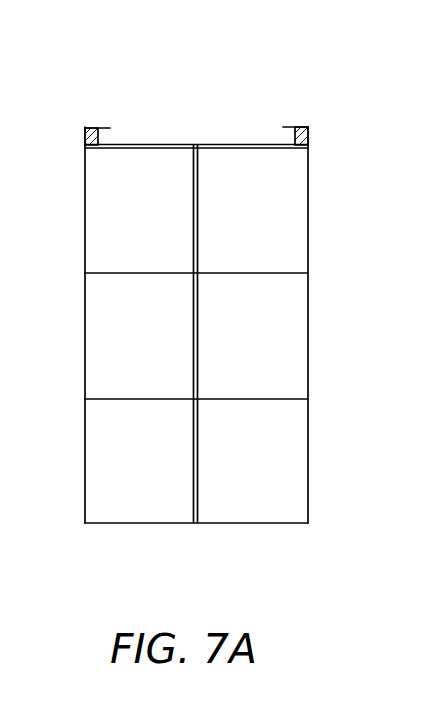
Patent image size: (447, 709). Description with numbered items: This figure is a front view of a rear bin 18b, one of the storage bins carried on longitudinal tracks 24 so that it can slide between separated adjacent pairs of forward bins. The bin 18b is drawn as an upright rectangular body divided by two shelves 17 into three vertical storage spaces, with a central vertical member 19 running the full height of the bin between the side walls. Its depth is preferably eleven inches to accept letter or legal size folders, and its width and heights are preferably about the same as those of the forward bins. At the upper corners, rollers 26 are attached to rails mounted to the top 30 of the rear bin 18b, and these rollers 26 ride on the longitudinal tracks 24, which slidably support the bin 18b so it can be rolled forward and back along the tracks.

The rear bin 18b is at (186, 101).
The longitudinal track 24 is at (87, 135).
The roller 26 is at (85, 127).
The shelf 17 is at (132, 274).
The central vertical divider 19 is at (198, 185).
The top 30 is at (208, 527).